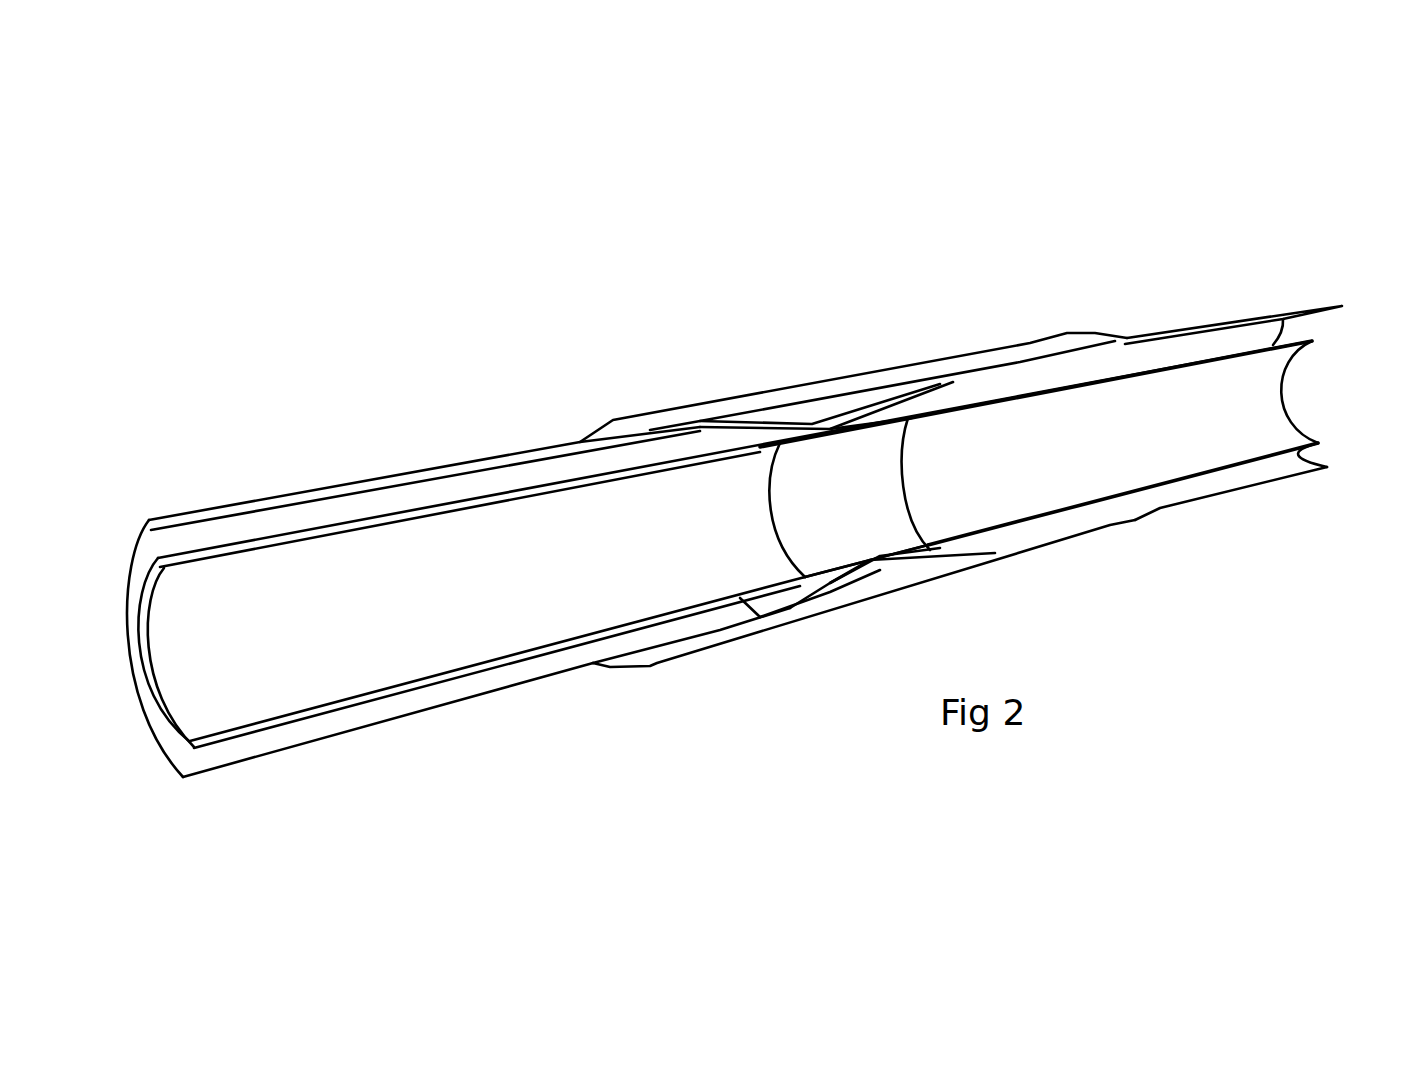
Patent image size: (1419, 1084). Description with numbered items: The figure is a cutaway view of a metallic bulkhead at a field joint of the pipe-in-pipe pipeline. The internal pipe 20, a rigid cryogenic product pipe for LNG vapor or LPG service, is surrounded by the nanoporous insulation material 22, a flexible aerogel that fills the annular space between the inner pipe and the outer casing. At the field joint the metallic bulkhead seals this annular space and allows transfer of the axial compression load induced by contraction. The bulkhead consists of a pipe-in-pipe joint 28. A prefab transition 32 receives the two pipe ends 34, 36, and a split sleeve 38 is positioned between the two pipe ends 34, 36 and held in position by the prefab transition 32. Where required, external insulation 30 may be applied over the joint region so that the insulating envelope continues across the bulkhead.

The internal pipe 20 is at (200, 687).
The nanoporous insulation material 22 is at (280, 515).
The pipe-in-pipe joint 28 is at (942, 506).
The external insulation 30 is at (952, 357).
The prefab transition 32 is at (806, 592).
The pipe end 34 is at (767, 515).
The pipe end 36 is at (900, 464).
The split sleeve 38 is at (882, 568).